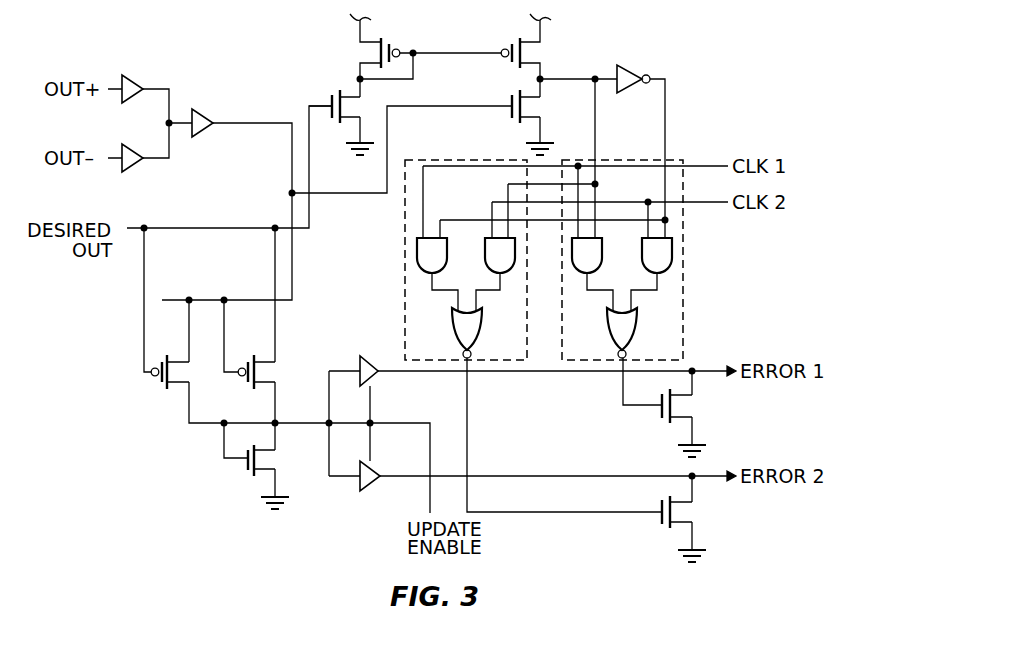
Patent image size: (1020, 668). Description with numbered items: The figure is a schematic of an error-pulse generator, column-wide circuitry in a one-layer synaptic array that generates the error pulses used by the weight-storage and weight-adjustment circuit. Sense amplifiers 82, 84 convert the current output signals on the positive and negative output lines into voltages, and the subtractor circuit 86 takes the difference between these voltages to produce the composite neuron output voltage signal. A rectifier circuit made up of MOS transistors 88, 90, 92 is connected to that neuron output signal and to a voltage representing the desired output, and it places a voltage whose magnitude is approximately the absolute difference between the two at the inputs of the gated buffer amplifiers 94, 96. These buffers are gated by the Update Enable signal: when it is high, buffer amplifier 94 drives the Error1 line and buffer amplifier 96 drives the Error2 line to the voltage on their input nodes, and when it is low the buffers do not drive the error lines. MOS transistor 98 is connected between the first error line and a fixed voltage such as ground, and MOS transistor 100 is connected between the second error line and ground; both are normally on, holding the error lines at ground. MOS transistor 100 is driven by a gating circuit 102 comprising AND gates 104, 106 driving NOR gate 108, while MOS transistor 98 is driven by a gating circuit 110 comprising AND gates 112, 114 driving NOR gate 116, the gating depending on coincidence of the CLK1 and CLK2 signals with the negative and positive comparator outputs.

The sense amplifier 82 is at (137, 77).
The sense amplifier 84 is at (139, 168).
The subtractor circuit 86 is at (199, 110).
The MOS transistor 88 is at (163, 388).
The MOS transistor 90 is at (277, 368).
The MOS transistor 92 is at (248, 477).
The gated buffer amplifier 94 is at (375, 379).
The gated buffer amplifier 96 is at (370, 492).
The MOS transistor 98 is at (687, 407).
The MOS transistor 100 is at (687, 512).
The gating circuit 102 is at (404, 290).
The AND gate 104 is at (417, 252).
The AND gate 106 is at (483, 253).
The NOR gate 108 is at (452, 333).
The gating circuit 110 is at (683, 272).
The AND gate 112 is at (602, 252).
The AND gate 114 is at (672, 248).
The NOR gate 116 is at (637, 335).